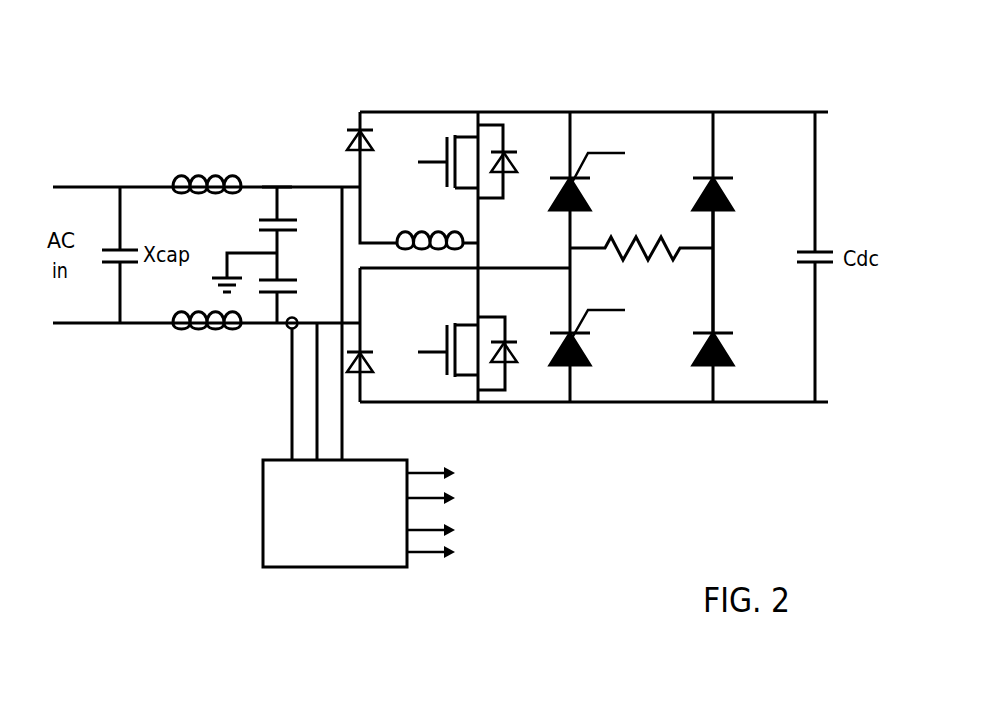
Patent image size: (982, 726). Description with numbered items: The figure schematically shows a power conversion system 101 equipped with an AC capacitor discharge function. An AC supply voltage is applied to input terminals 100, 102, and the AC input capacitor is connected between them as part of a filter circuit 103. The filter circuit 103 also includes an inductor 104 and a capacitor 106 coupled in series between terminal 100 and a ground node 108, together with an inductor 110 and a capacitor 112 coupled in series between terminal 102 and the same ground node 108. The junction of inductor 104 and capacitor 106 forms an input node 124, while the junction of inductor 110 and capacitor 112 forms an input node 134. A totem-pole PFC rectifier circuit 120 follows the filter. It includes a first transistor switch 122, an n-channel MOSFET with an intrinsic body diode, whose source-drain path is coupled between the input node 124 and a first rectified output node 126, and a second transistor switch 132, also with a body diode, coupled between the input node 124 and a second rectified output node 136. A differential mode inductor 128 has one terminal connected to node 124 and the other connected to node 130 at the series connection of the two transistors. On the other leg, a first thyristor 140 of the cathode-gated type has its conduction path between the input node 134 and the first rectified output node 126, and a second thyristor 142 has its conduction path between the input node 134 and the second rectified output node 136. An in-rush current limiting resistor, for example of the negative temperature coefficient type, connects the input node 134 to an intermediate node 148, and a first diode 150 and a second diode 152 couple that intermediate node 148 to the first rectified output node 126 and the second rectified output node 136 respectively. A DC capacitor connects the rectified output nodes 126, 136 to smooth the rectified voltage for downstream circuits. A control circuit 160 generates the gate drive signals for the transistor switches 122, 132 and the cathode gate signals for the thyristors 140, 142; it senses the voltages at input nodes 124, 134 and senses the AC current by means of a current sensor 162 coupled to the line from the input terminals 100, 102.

The input terminal 100 is at (70, 184).
The input terminal 102 is at (78, 326).
The filter circuit 103 is at (263, 176).
The inductor 104 is at (193, 180).
The capacitor 106 is at (260, 222).
The ground node 108 is at (217, 277).
The inductor 110 is at (187, 331).
The capacitor 112 is at (297, 290).
The power conversion system 101 is at (375, 97).
The PFC rectifier circuit 120 is at (616, 97).
The first transistor switch 122 is at (448, 130).
The input node 124 is at (297, 186).
The first rectified output node 126 is at (745, 108).
The differential mode inductor 128 is at (416, 232).
The node 130 is at (482, 248).
The second transistor switch 132 is at (453, 377).
The input node 134 is at (360, 303).
The second rectified output node 136 is at (592, 402).
The first thyristor 140 is at (588, 197).
The second thyristor 142 is at (590, 360).
The intermediate node 148 is at (713, 250).
The first diode 150 is at (728, 197).
The second diode 152 is at (733, 360).
The control circuit 160 is at (263, 505).
The current sensor 162 is at (289, 330).